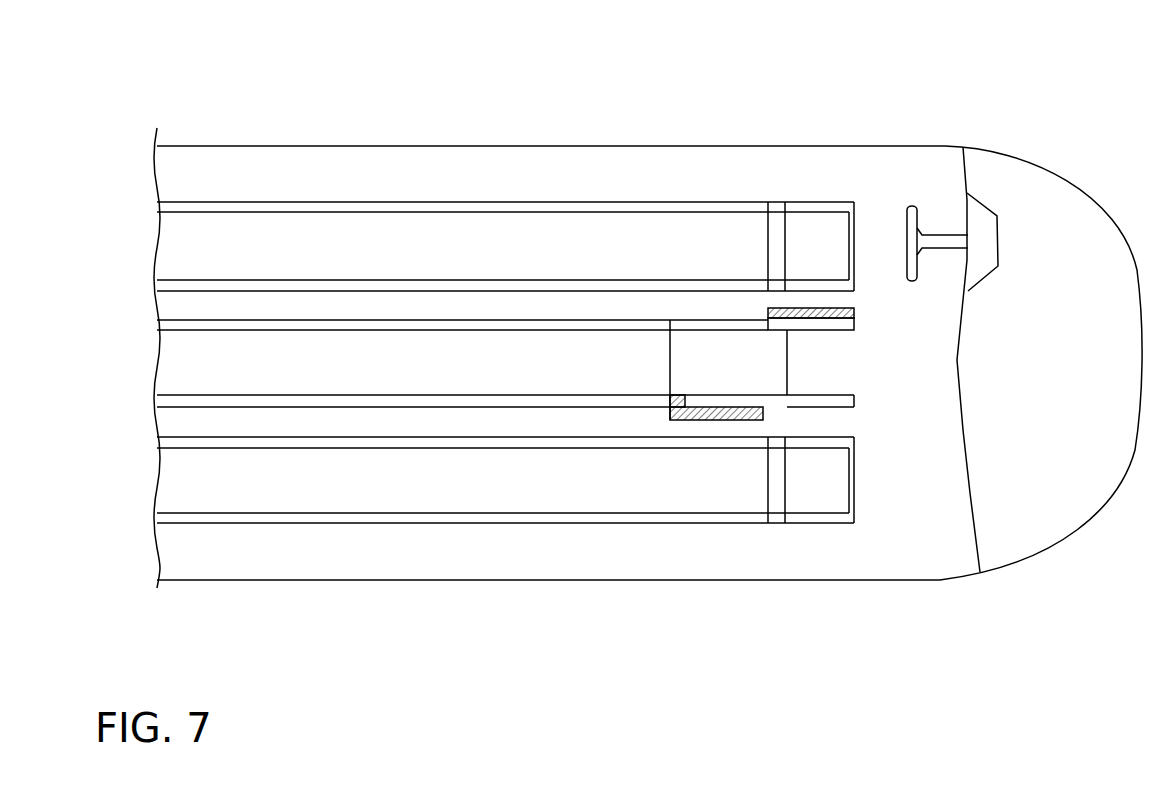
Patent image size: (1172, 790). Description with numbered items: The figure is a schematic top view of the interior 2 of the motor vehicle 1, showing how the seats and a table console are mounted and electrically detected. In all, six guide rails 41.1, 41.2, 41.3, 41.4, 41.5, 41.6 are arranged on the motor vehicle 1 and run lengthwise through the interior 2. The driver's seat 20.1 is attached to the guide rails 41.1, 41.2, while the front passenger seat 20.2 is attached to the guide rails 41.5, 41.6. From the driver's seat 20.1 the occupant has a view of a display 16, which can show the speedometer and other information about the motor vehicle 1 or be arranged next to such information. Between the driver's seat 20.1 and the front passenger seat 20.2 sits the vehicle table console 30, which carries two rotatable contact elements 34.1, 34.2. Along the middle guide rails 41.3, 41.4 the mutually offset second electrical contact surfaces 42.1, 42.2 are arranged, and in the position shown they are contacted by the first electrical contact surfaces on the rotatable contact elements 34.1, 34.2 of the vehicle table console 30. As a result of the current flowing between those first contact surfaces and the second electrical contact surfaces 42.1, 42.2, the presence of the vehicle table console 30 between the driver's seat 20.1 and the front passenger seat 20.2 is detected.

The motor vehicle 1 is at (906, 128).
The interior 2 is at (918, 550).
The display 16 is at (984, 228).
The driver's seat 20.1 is at (842, 260).
The front passenger seat 20.2 is at (842, 496).
The vehicle table console 30 is at (737, 376).
The rotatable contact element 34.1 is at (549, 341).
The rotatable contact element 34.2 is at (677, 420).
The guide rail 41.1 is at (577, 208).
The guide rail 41.2 is at (476, 285).
The guide rail 41.3 is at (375, 322).
The guide rail 41.4 is at (375, 403).
The guide rail 41.5 is at (476, 444).
The guide rail 41.6 is at (577, 520).
The second electrical contact surface 42.1 is at (836, 313).
The second electrical contact surface 42.2 is at (805, 425).